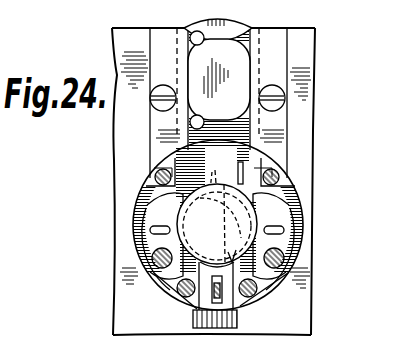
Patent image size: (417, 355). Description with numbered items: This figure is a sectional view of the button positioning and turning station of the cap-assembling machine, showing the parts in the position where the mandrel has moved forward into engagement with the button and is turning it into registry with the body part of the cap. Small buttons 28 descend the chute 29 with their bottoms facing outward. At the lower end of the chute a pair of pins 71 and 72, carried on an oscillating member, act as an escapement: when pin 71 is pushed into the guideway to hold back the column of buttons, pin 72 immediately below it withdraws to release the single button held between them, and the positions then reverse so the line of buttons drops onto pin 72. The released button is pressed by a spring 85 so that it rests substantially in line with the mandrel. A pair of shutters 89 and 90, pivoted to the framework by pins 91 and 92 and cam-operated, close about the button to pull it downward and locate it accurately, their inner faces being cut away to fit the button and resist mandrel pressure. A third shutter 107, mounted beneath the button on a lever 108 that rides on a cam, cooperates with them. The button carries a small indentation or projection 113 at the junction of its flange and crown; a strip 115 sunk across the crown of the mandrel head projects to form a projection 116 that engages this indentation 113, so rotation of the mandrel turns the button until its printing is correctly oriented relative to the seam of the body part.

The button 28 is at (240, 70).
The chute 29 is at (280, 34).
The pin 71 is at (190, 37).
The pin 72 is at (190, 121).
The spring 85 is at (243, 167).
The shutter 89 is at (300, 218).
The shutter 90 is at (165, 213).
The pin 91 is at (284, 257).
The pin 92 is at (152, 258).
The third shutter 107 is at (226, 297).
The lever 108 is at (214, 284).
The indentation or projection 113 is at (268, 183).
The strip 115 is at (221, 205).
The projection 116 is at (217, 225).